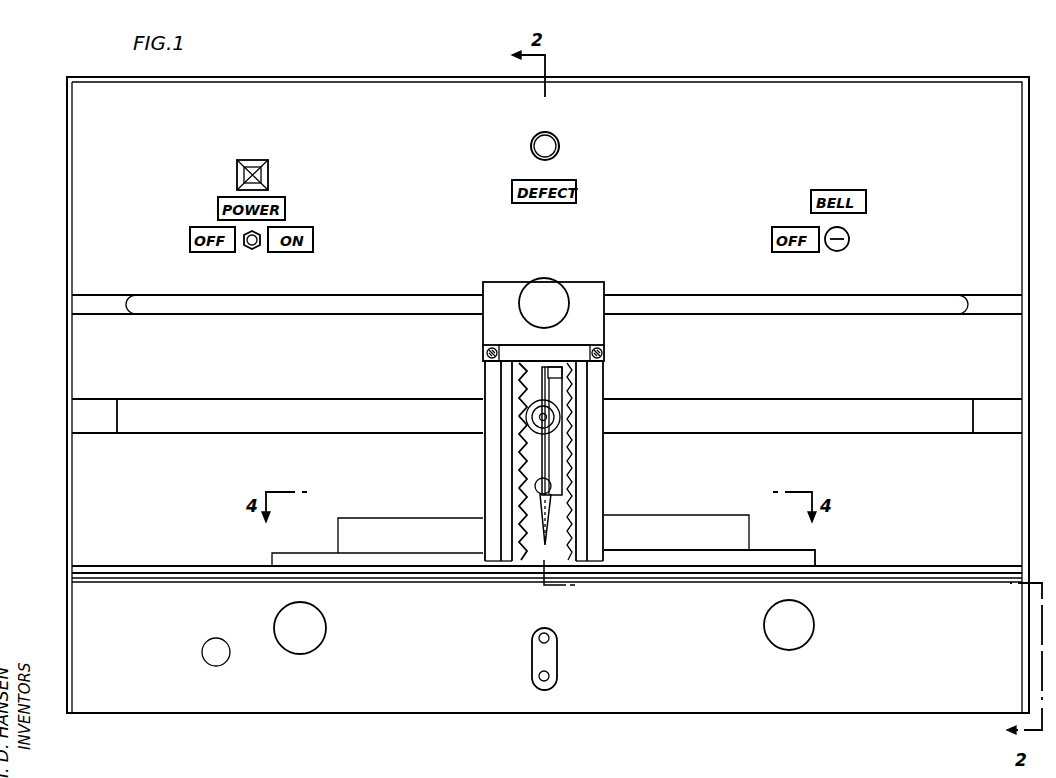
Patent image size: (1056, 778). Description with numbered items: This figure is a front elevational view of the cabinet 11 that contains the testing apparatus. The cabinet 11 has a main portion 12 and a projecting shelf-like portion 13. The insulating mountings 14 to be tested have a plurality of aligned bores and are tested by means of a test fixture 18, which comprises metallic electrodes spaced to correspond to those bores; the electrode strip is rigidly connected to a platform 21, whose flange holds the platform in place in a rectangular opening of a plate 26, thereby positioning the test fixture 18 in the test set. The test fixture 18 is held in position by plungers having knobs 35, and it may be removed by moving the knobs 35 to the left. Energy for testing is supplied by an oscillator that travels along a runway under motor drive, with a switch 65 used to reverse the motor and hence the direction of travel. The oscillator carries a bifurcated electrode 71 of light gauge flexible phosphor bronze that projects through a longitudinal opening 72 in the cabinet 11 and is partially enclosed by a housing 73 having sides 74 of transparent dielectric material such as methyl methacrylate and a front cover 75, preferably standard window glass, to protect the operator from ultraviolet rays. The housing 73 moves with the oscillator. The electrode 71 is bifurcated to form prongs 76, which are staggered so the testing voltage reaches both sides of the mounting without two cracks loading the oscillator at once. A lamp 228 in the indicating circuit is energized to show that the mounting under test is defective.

The cabinet 11 is at (339, 70).
The main portion 12 is at (74, 201).
The shelf-like portion 13 is at (910, 561).
The insulating mountings 14 is at (716, 520).
The test fixture 18 is at (311, 548).
The platform 21 is at (782, 555).
The plate 26 is at (963, 568).
The knobs 35 is at (303, 645).
The switch 65 is at (552, 655).
The bifurcated electrode 71 is at (540, 380).
The longitudinal opening 72 is at (372, 401).
The housing 73 is at (492, 334).
The sides 74 is at (503, 415).
The front cover 75 is at (518, 474).
The prongs 76 is at (547, 548).
The lamp 228 is at (548, 141).